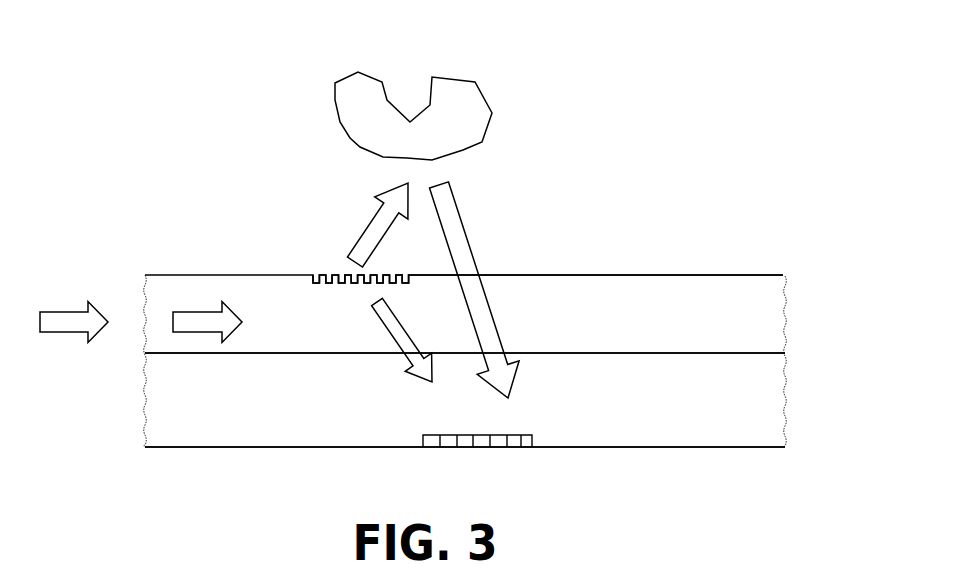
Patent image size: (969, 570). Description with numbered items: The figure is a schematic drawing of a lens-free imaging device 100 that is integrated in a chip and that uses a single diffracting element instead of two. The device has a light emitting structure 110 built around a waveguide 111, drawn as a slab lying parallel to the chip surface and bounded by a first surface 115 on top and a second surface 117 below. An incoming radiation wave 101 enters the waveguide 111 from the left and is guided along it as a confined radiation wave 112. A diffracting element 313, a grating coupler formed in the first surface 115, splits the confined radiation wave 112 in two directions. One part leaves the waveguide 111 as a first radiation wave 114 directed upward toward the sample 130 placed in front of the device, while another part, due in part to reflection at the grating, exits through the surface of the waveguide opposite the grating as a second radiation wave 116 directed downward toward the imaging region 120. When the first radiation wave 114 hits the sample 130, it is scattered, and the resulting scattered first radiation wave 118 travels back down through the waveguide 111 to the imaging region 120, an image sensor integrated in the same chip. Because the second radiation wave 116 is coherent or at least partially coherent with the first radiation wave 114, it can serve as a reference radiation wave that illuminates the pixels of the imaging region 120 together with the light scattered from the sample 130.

The lens-free imaging device 100 is at (78, 124).
The incoming radiation wave 101 is at (60, 310).
The light emitting structure 110 is at (787, 270).
The waveguide 111 is at (168, 292).
The confined radiation wave 112 is at (198, 312).
The first radiation wave 114 is at (380, 207).
The first surface 115 is at (697, 275).
The second radiation wave 116 is at (397, 340).
The second surface 117 is at (260, 353).
The scattered first radiation wave 118 is at (463, 223).
The imaging region 120 is at (503, 435).
The sample 130 is at (387, 98).
The diffracting element 313 is at (316, 270).